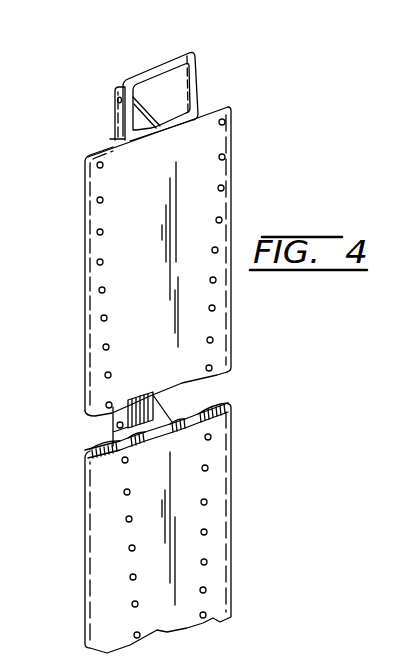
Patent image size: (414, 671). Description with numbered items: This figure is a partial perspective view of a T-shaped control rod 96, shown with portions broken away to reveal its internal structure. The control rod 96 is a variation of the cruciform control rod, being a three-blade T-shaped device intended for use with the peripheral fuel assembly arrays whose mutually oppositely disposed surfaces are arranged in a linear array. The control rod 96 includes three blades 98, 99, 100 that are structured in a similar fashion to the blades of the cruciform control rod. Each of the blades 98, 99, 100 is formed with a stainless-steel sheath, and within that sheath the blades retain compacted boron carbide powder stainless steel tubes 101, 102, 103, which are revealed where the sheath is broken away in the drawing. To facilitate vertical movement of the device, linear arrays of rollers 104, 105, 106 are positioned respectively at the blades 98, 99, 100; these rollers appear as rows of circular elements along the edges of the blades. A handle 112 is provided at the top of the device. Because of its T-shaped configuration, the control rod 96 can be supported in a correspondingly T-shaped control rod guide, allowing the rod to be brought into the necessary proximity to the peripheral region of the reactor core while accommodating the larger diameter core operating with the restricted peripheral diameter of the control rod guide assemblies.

The T-shaped control rod 96 is at (290, 124).
The blade 98 is at (210, 142).
The blade 99 is at (97, 192).
The blade 100 is at (112, 127).
The compacted boron carbide powder stainless steel tubes 101 is at (232, 405).
The compacted boron carbide powder stainless steel tubes 102 is at (88, 458).
The compacted boron carbide powder stainless steel tubes 103 is at (127, 412).
The linear array of rollers 104 is at (217, 194).
The linear array of rollers 105 is at (97, 262).
The linear array of rollers 106 is at (124, 440).
The handle 112 is at (166, 65).